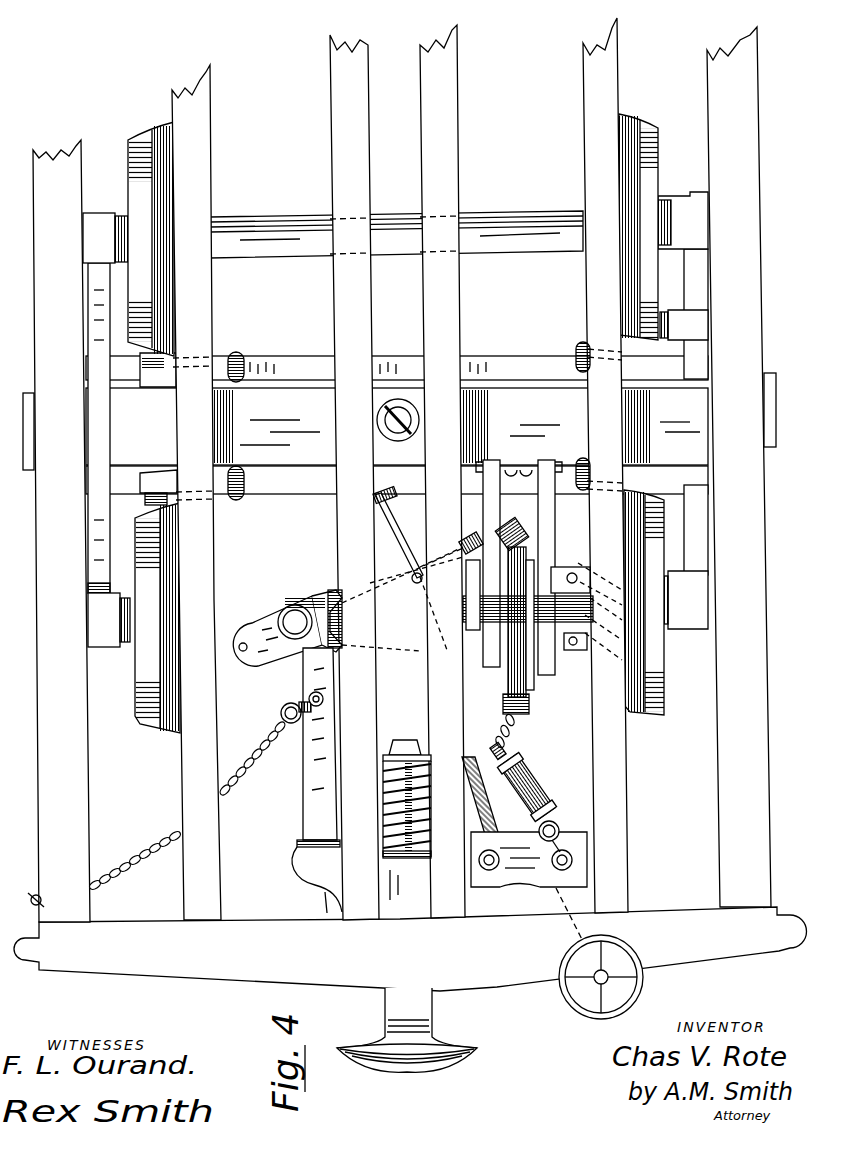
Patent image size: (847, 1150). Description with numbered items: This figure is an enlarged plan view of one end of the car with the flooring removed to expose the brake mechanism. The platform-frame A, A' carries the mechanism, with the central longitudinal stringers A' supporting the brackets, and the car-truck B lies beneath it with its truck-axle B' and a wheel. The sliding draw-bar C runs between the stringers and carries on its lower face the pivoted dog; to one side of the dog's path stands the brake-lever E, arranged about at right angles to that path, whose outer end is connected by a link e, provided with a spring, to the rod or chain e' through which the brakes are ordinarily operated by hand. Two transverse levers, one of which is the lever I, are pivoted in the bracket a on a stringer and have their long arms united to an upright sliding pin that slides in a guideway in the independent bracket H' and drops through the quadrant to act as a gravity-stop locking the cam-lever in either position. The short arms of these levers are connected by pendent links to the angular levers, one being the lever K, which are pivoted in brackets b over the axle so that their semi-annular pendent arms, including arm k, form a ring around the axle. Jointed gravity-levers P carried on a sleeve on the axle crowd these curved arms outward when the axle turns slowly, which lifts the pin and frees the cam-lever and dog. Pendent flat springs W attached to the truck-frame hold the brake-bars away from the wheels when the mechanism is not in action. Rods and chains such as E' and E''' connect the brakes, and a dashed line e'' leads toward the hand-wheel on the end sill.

The platform-frame A is at (410, 504).
The central longitudinal joists or stringers A' is at (397, 472).
The car-truck B is at (397, 426).
The truck-axle B' is at (283, 622).
The sliding draw-bar C is at (407, 1030).
The brake-lever E is at (524, 822).
The chain connection E' is at (296, 747).
The brake chain E''' is at (187, 805).
The independent bracket H' is at (317, 734).
The transverse lever I is at (402, 586).
The angular lever K is at (528, 615).
The pendent curved arm k is at (510, 619).
The compound or jointed gravity-lever P is at (570, 619).
The pendent flat spring W is at (236, 352).
The bracket a is at (471, 593).
The bracket b is at (515, 567).
The link e is at (504, 731).
The rod or chain e' is at (468, 698).
The brake rod e'' is at (566, 931).